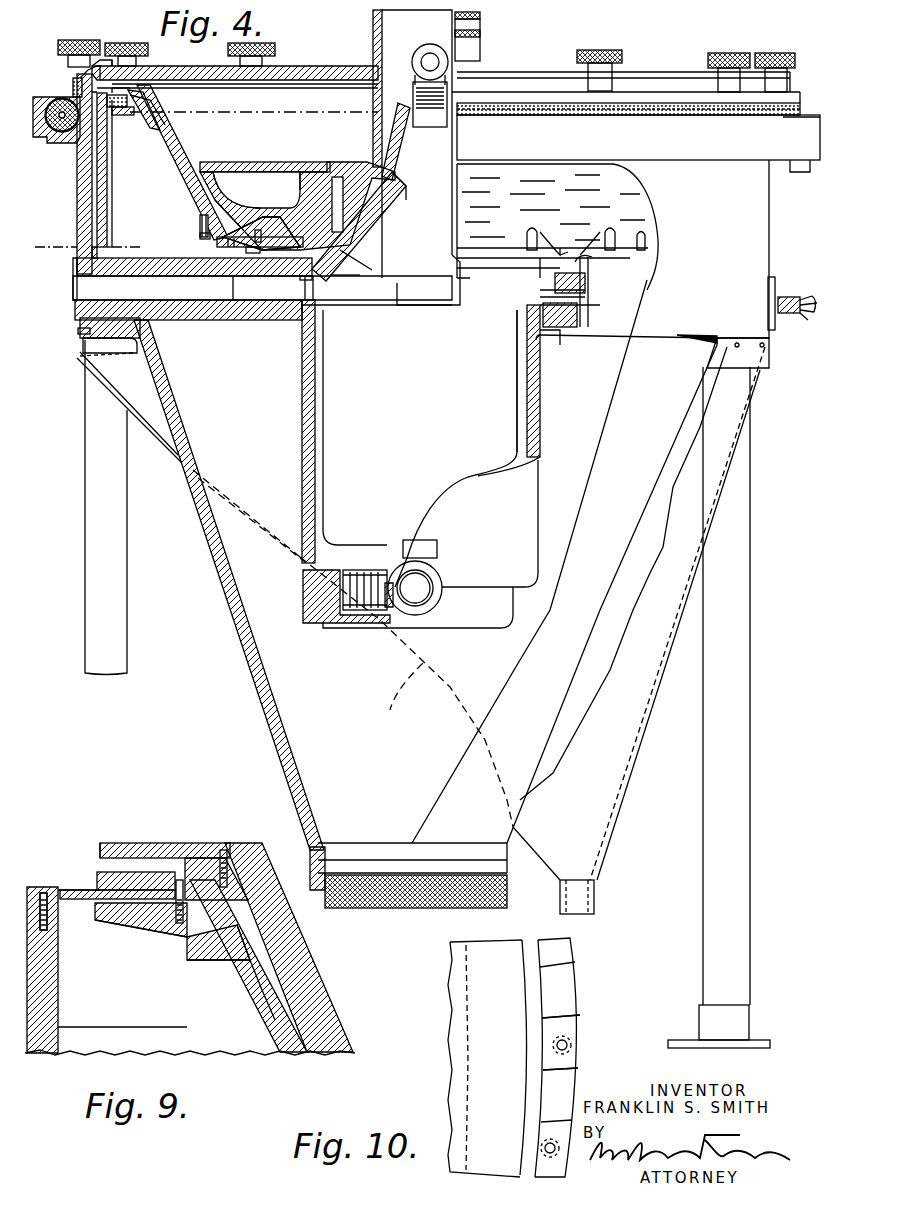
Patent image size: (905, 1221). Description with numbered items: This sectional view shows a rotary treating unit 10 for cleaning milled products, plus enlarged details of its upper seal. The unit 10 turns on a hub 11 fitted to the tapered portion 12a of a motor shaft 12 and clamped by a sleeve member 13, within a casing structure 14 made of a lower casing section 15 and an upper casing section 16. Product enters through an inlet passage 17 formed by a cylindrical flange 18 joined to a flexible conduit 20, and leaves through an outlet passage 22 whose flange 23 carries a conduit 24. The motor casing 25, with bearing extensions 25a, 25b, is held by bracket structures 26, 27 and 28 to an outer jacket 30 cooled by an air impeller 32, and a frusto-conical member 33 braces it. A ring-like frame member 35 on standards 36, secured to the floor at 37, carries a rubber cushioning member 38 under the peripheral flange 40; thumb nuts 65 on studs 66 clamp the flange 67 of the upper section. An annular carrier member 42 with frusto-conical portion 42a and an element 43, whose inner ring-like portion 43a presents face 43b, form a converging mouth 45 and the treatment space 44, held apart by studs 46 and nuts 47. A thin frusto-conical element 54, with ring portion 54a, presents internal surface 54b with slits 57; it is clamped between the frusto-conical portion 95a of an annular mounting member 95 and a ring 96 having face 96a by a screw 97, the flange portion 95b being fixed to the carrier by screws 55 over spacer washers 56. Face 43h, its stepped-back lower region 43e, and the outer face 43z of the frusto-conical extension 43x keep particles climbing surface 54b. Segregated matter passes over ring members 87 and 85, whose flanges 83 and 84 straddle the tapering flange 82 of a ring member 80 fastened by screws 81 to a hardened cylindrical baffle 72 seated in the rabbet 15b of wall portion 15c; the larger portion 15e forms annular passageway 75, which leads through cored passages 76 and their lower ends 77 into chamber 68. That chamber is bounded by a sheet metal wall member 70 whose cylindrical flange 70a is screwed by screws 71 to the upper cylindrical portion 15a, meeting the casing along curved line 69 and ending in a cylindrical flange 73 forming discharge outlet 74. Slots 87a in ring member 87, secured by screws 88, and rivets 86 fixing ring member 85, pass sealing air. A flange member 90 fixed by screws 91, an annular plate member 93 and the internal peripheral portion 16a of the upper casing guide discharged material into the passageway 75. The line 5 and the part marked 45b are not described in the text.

In FIG. 4, the base frame 5 is at (70, 290).
In FIG. 4, the rotary treating unit 10 is at (244, 207).
In FIG. 9, the rotary treating unit 10 is at (82, 912).
In FIG. 4, the hub 11 is at (378, 115).
In FIG. 4, the shaft 12 is at (676, 251).
In FIG. 4, the tapered portion 12a is at (448, 140).
In FIG. 4, the sleeve member 13 is at (398, 65).
In FIG. 4, the casing structure 14 is at (199, 557).
In FIG. 4, the lower casing section 15 is at (266, 749).
In FIG. 4, the upper cylindrical portion 15a is at (95, 268).
In FIG. 4, the internal cylindrical step or rabbet 15b is at (97, 242).
In FIG. 4, the wall portion 15c is at (92, 228).
In FIG. 4, the upwardly extending wall portion 15e is at (85, 190).
In FIG. 4, the upper casing section 16 is at (292, 72).
In FIG. 4, the internal peripheral portion 16a is at (112, 62).
In FIG. 4, the inlet passage 17 is at (375, 32).
In FIG. 4, the cylindrical flange 18 is at (480, 40).
In FIG. 4, the tubular conduit 20 is at (480, 15).
In FIG. 4, the outlet passage 22 is at (348, 880).
In FIG. 4, the outlet flange 23 is at (308, 860).
In FIG. 4, the conduit 24 is at (435, 908).
In FIG. 4, the motor casing 25 is at (421, 464).
In FIG. 4, the bearing extension 25a is at (405, 545).
In FIG. 4, the bearing extension 25b is at (410, 290).
In FIG. 4, the bracket structure 26 is at (158, 320).
In FIG. 4, the bracket structure 27 is at (590, 322).
In FIG. 4, the bracket structures 28 is at (420, 617).
In FIG. 4, the outer jacket 30 is at (540, 378).
In FIG. 4, the air impeller 32 is at (352, 590).
In FIG. 4, the frusto-conical member 33 is at (345, 246).
In FIG. 4, the ring-like frame member 35 is at (45, 143).
In FIG. 4, the standards 36 is at (85, 614).
In FIG. 4, the floor securing point 37 is at (699, 1018).
In FIG. 4, the cushioning member 38 is at (60, 148).
In FIG. 4, the peripheral flange 40 is at (73, 87).
In FIG. 4, the annular carrier member 42 is at (335, 258).
In FIG. 4, the frusto-conical portion 42a is at (380, 208).
In FIG. 4, the element 43 is at (283, 190).
In FIG. 4, the inner ring-like portion 43a is at (308, 168).
In FIG. 4, the internal frusto-conical face 43b is at (390, 170).
In FIG. 4, the stepped-back lower region 43e is at (233, 205).
In FIG. 4, the guiding face 43h is at (200, 210).
In FIG. 4, the frusto-conical extension 43x is at (162, 100).
In FIG. 9, the frusto-conical extension 43x is at (320, 1015).
In FIG. 4, the outer face 43z is at (180, 165).
In FIG. 9, the outer face 43z is at (268, 1022).
In FIG. 4, the treatment space 44 is at (280, 195).
In FIG. 4, the mouth 45 is at (382, 192).
In FIG. 4, the liquid level 45b is at (175, 123).
In FIG. 4, the studs 46 is at (395, 172).
In FIG. 4, the nuts 47 is at (338, 176).
In FIG. 4, the element 54 is at (163, 162).
In FIG. 9, the element 54 is at (262, 1010).
In FIG. 4, the ring or flange portion 54a is at (570, 300).
In FIG. 9, the internal surface 54b is at (258, 998).
In FIG. 4, the screws 55 is at (252, 255).
In FIG. 4, the washers 56 is at (238, 322).
In FIG. 4, the slits 57 is at (540, 168).
In FIG. 4, the thumb nuts 65 is at (262, 45).
In FIG. 4, the threaded studs 66 is at (85, 72).
In FIG. 4, the flange 67 is at (660, 90).
In FIG. 4, the chamber 68 is at (112, 384).
In FIG. 4, the closed curved line 69 is at (353, 648).
In FIG. 4, the sheet metal wall member 70 is at (90, 370).
In FIG. 4, the upper cylindrical flange 70a is at (83, 345).
In FIG. 4, the screws 71 is at (78, 330).
In FIG. 4, the cylindrical baffle member 72 is at (97, 215).
In FIG. 9, the cylindrical baffle member 72 is at (58, 1010).
In FIG. 4, the cylindrical flange 73 is at (594, 893).
In FIG. 4, the discharge outlet 74 is at (594, 907).
In FIG. 4, the annular passageway 75 is at (96, 197).
In FIG. 4, the cored passages 76 is at (77, 256).
In FIG. 4, the lower open ends 77 is at (78, 355).
In FIG. 9, the ring member 80 is at (65, 880).
In FIG. 9, the screws 81 is at (44, 890).
In FIG. 4, the tapering flange 82 is at (120, 110).
In FIG. 9, the tapering flange 82 is at (140, 912).
In FIG. 10, the tapering flange 82 is at (450, 1048).
In FIG. 4, the flange 83 is at (125, 66).
In FIG. 9, the flange 83 is at (97, 880).
In FIG. 10, the flange 83 is at (533, 998).
In FIG. 4, the flange 84 is at (137, 116).
In FIG. 9, the flange 84 is at (110, 910).
In FIG. 9, the ring member 85 is at (225, 962).
In FIG. 9, the rivets 86 is at (195, 962).
In FIG. 9, the ring member 87 is at (200, 858).
In FIG. 10, the ring member 87 is at (578, 990).
In FIG. 9, the slots 87a is at (187, 945).
In FIG. 10, the slots 87a is at (565, 1005).
In FIG. 9, the screws 88 is at (180, 878).
In FIG. 10, the screws 88 is at (572, 1045).
In FIG. 4, the flange member 90 is at (130, 82).
In FIG. 9, the flange member 90 is at (168, 843).
In FIG. 9, the screws 91 is at (230, 858).
In FIG. 4, the annular plate member 93 is at (240, 160).
In FIG. 4, the annular mounting member 95 is at (194, 276).
In FIG. 4, the frusto-conical portion 95a is at (215, 248).
In FIG. 4, the flange portion 95b is at (232, 250).
In FIG. 4, the ring 96 is at (200, 215).
In FIG. 4, the internal frusto-conical face 96a is at (200, 232).
In FIG. 4, the screw 97 is at (215, 235).